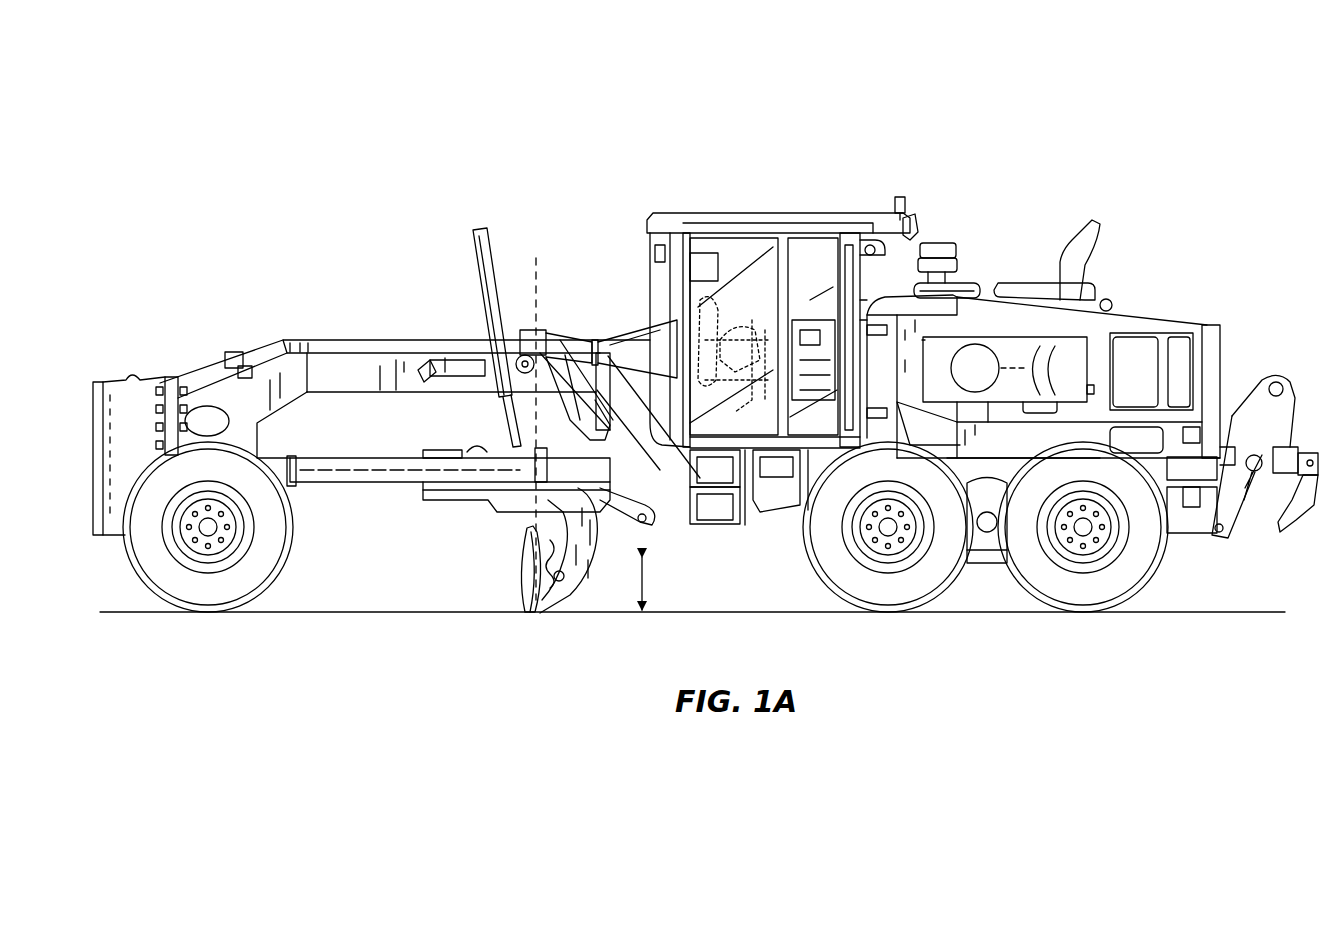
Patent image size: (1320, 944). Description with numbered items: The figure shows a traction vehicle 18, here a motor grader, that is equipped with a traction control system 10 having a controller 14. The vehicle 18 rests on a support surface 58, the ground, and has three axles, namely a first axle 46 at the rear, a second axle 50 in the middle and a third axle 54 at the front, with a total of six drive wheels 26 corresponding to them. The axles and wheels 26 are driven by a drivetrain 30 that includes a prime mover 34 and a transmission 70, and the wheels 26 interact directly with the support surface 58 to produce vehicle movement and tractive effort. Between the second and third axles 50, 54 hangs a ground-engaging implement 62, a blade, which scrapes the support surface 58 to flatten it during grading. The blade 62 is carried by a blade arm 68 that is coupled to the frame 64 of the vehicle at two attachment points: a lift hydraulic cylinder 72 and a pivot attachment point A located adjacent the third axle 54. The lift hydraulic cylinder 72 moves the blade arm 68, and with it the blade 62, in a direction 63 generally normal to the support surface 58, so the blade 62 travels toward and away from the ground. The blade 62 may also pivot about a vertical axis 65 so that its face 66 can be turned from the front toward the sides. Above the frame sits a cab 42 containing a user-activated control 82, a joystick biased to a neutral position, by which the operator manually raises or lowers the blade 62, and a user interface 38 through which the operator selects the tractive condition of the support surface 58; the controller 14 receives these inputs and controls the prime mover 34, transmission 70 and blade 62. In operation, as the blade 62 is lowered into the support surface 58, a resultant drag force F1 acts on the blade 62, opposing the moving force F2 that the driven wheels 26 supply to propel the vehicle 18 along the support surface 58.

The traction vehicle 18 is at (353, 140).
The traction control system 10 is at (782, 319).
The controller 14 is at (782, 319).
The user interface 38 is at (713, 258).
The user-activated control 82 is at (801, 316).
The cab 42 is at (857, 262).
The prime mover 34 is at (975, 347).
The drivetrain 30 is at (1046, 376).
The transmission 70 is at (1072, 358).
The drive wheels 26 is at (270, 532).
The third axle 54 is at (217, 540).
The second axle 50 is at (893, 537).
The first axle 46 is at (1097, 548).
The frame 64 is at (277, 360).
The lift hydraulic cylinder 72 is at (490, 237).
The vertical axis 65 is at (538, 307).
The blade arm 68 is at (377, 477).
The face 66 is at (513, 540).
The ground-engaging implement 62 is at (540, 603).
The direction 63 is at (645, 585).
The support surface 58 is at (1250, 611).
The pivot attachment point A is at (269, 452).
The resultant drag force F1 is at (522, 573).
The moving force F2 is at (998, 630).